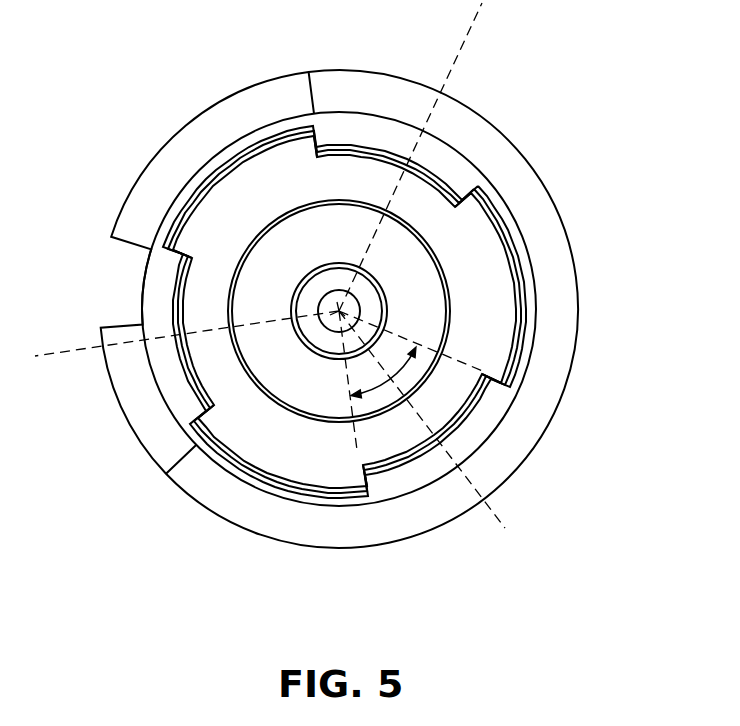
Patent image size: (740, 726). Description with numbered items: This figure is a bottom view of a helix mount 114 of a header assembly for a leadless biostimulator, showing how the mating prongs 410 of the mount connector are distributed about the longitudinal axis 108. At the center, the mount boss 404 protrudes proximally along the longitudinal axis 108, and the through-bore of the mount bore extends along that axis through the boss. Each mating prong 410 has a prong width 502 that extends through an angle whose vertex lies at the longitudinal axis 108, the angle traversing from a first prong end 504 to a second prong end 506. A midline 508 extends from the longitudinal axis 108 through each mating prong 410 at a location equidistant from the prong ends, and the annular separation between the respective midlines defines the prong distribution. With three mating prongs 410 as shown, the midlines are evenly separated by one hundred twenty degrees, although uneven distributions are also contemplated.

The rotary adjustment assembly 114 is at (174, 68).
The longitudinal axis 108 is at (341, 314).
The mount boss 404 is at (252, 308).
The mating prongs 410 is at (188, 270).
The prong width 502 is at (420, 397).
The first prong end 504 is at (343, 499).
The second prong end 506 is at (527, 356).
The midline 508 is at (462, 48).